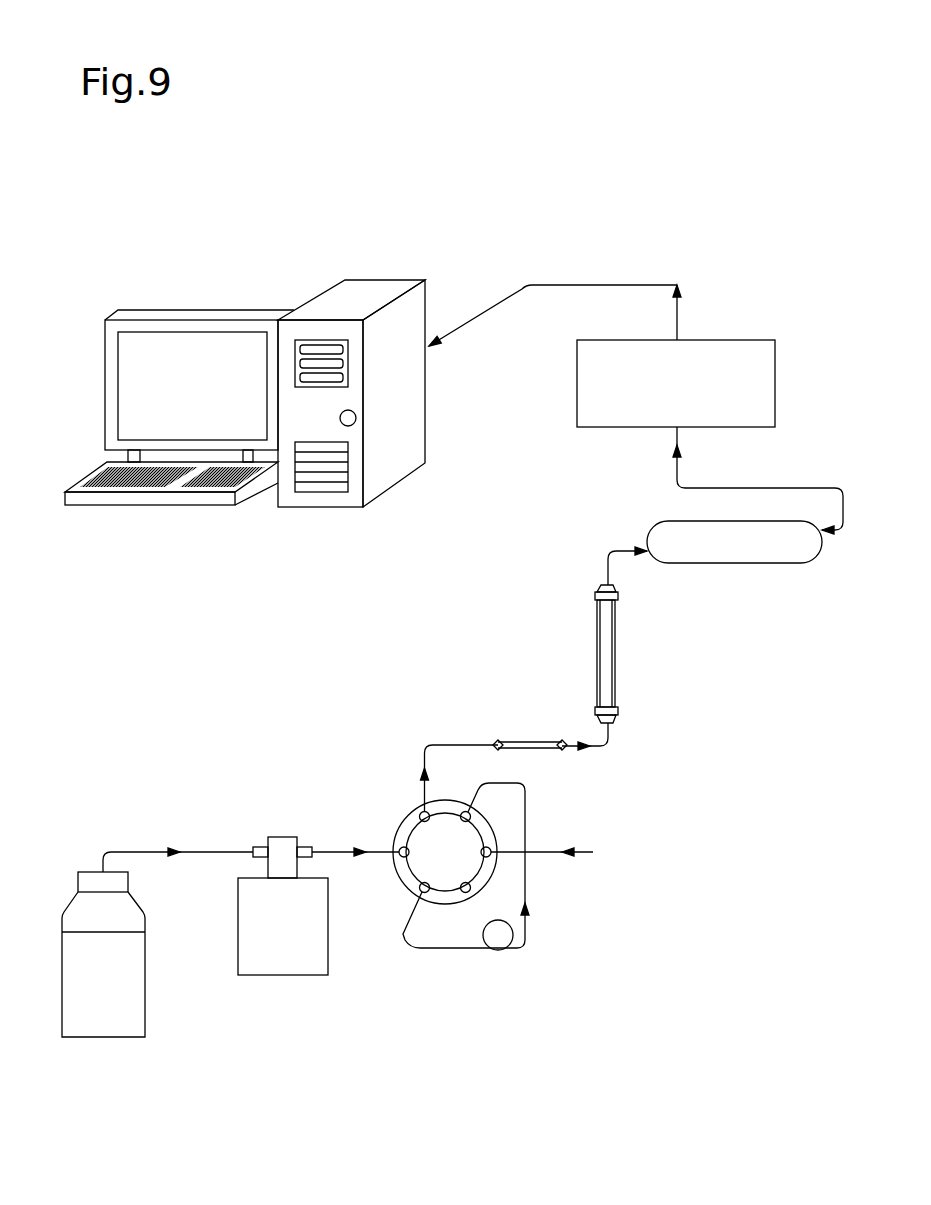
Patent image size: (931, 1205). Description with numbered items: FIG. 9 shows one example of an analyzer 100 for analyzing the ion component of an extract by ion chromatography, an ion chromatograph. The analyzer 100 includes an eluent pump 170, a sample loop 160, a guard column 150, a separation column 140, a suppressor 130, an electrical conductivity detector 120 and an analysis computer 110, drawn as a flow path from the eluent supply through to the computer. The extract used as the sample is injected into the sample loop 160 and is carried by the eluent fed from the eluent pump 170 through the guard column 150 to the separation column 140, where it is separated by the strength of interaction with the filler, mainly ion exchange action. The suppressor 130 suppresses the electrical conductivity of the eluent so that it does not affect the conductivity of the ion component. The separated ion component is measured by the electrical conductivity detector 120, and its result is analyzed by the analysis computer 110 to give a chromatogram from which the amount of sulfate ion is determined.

The analyzer 100 is at (92, 238).
The analysis computer 110 is at (212, 295).
The electrical conductivity detector 120 is at (577, 385).
The suppressor 130 is at (650, 523).
The separation column 140 is at (597, 652).
The guard column 150 is at (498, 743).
The sample loop 160 is at (541, 962).
The eluent pump 170 is at (285, 975).